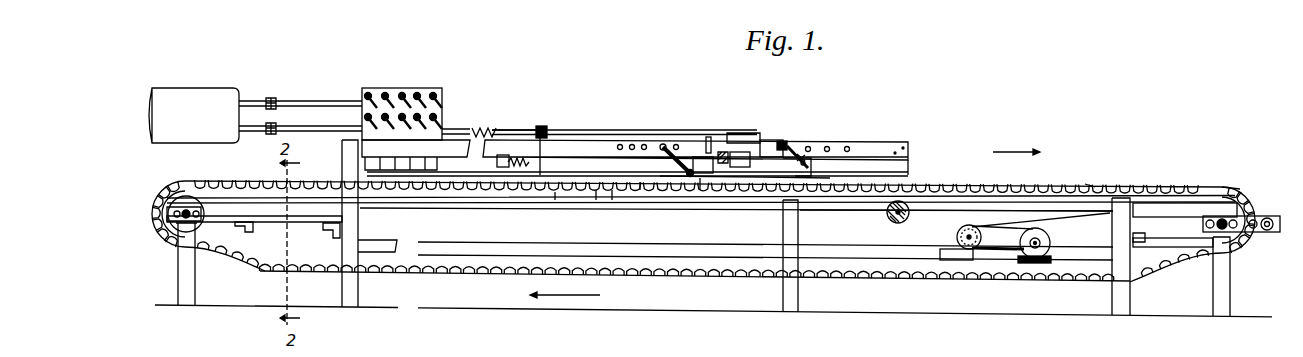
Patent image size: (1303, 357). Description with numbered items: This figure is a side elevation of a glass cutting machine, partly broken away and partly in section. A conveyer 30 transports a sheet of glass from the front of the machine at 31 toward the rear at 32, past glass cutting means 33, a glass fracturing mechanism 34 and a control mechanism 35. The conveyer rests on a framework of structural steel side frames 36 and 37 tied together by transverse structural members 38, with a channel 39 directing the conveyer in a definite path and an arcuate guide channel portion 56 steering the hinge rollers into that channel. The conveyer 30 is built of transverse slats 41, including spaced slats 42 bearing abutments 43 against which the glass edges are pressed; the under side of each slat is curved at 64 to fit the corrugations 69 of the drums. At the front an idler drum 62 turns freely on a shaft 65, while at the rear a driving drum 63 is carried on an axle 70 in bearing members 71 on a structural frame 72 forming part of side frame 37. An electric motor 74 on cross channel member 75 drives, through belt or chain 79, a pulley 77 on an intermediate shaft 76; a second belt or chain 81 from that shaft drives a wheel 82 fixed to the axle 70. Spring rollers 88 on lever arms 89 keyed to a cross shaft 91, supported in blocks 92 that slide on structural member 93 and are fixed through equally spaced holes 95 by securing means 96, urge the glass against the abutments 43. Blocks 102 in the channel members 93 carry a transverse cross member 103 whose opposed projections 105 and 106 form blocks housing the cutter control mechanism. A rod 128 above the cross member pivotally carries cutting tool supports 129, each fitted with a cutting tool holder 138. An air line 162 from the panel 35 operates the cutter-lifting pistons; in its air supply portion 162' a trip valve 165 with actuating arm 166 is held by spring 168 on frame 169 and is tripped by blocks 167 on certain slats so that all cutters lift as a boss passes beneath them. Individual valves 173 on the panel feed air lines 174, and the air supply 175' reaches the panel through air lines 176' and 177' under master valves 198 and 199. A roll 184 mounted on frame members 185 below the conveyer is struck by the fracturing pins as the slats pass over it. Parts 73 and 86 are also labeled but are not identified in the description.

The conveyer 30 is at (1088, 184).
The front of the machine 31 is at (175, 248).
The rear of the machine 32 is at (1240, 252).
The glass cutting means 33 is at (793, 143).
The glass fracturing mechanism 34 is at (887, 212).
The control mechanism 35 is at (442, 90).
The side frame 36 is at (775, 207).
The side frame 37 is at (800, 300).
The transversely extending structural members 38 is at (253, 220).
The channel 39 is at (458, 204).
The slats 41 is at (1040, 183).
The spaced slats 42 is at (665, 200).
The abutments 43 is at (650, 197).
The guide channel portions 56 is at (237, 262).
The idler drum 62 is at (170, 188).
The driving drum 63 is at (1268, 218).
The curved under side of slat 64 is at (611, 196).
The shaft 65 is at (160, 228).
The corrugations 69 is at (230, 178).
The axle 70 is at (1225, 210).
The bearing members 71 is at (1220, 215).
The structural frame 72 is at (1140, 203).
The belt 73 is at (962, 228).
The electric motor 74 is at (1050, 243).
The cross channel member 75 is at (1040, 265).
The intermediate shaft 76 is at (957, 237).
The pulley 77 is at (956, 260).
The belt or chain 79 is at (988, 230).
The belt or chain member 81 is at (1040, 216).
The wheel 82 is at (1246, 194).
The chain 86 is at (1200, 250).
The spring rollers 88 is at (700, 188).
The lever arms 89 is at (673, 162).
The cross shaft 91 is at (665, 144).
The blocks 92 is at (677, 144).
The structural member 93 is at (900, 147).
The holes 95 is at (620, 144).
The securing means 96 is at (705, 137).
The block 102 is at (745, 150).
The cross member 103 is at (768, 138).
The projections 105 is at (805, 172).
The projections 106 is at (700, 186).
The rod 128 is at (723, 150).
The cutting tool supports 129 is at (798, 140).
The cutting tool holder 138 is at (781, 140).
The air line 162 is at (601, 108).
The air supply portion 162' is at (523, 108).
The trip valve 165 is at (548, 128).
The actuating arm 166 is at (201, 214).
The blocks 167 is at (558, 198).
The spring 168 is at (522, 158).
The frame 169 is at (500, 155).
The individual valve 173 is at (370, 93).
The air line 174 is at (418, 172).
The air supply 175' is at (194, 107).
The air line 176' is at (300, 95).
The air line 177' is at (300, 118).
The roll 184 is at (895, 224).
The frame members 185 is at (912, 168).
The master valve 198 is at (270, 98).
The master valve 199 is at (268, 134).